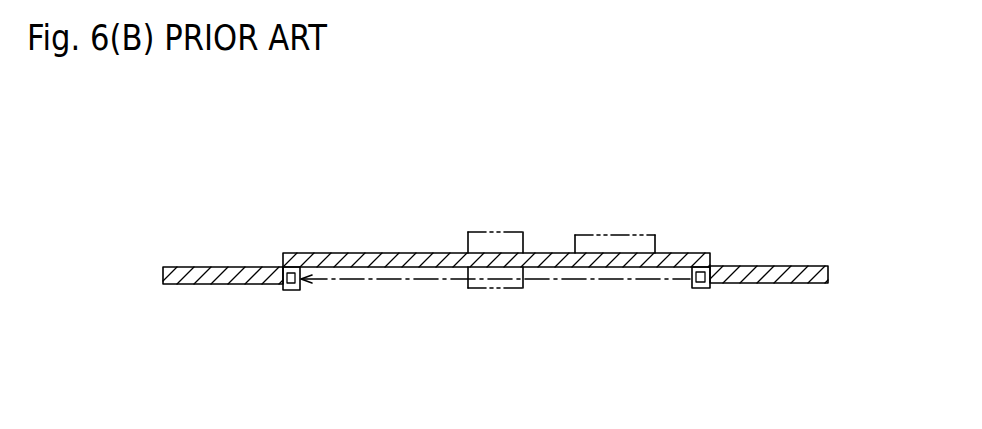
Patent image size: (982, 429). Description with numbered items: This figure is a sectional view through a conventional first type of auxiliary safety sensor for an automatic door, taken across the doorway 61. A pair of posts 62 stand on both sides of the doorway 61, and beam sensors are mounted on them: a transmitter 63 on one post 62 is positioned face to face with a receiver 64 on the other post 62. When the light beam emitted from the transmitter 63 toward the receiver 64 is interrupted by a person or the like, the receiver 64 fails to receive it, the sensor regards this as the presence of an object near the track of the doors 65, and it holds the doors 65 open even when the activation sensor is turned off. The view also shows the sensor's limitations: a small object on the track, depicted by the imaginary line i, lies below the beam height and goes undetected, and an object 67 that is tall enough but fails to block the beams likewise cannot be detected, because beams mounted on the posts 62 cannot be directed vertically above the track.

The doorway 61 is at (512, 288).
The post 62 is at (287, 290).
The transmitter 63 is at (732, 262).
The receiver 64 is at (265, 267).
The door 65 is at (447, 237).
The object 67 is at (598, 237).
The imaginary line i is at (473, 290).